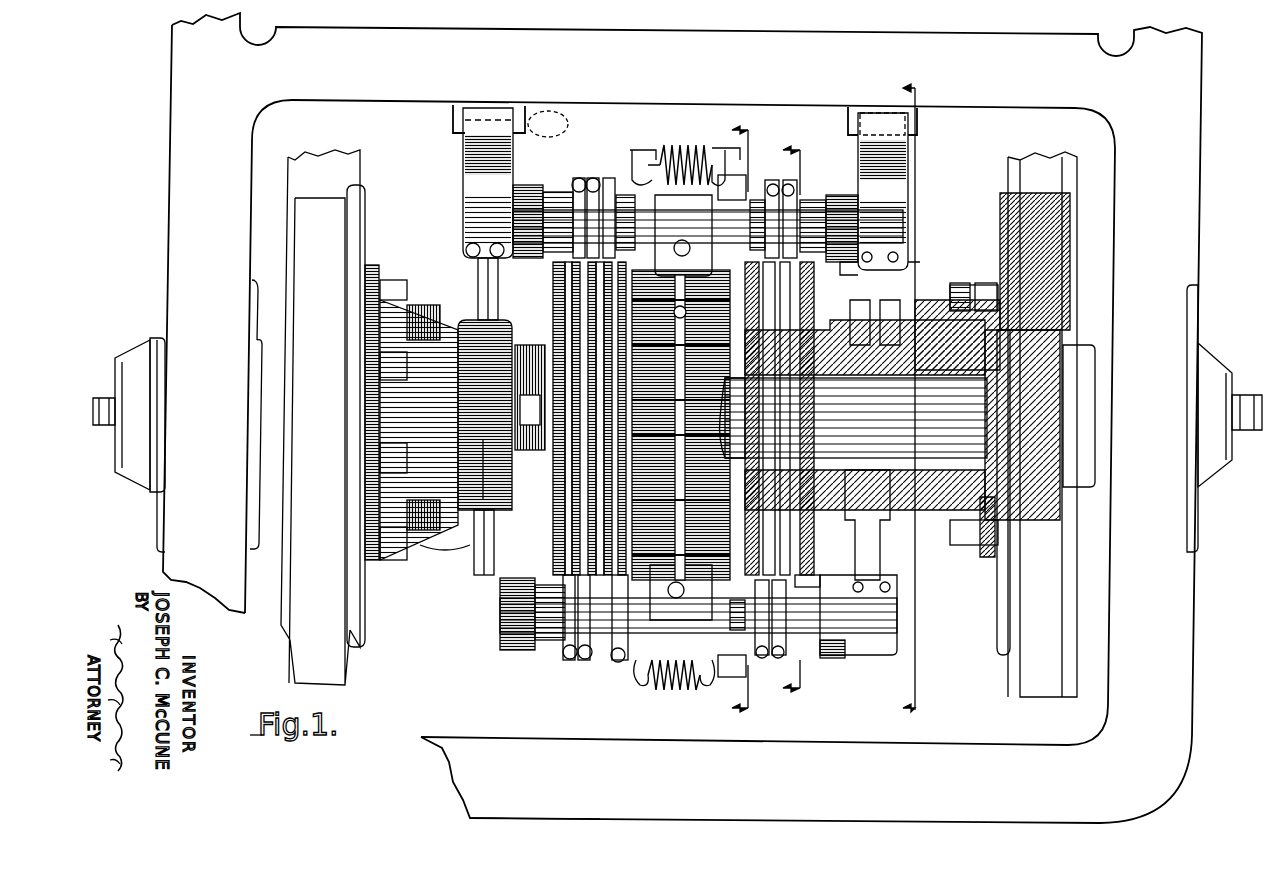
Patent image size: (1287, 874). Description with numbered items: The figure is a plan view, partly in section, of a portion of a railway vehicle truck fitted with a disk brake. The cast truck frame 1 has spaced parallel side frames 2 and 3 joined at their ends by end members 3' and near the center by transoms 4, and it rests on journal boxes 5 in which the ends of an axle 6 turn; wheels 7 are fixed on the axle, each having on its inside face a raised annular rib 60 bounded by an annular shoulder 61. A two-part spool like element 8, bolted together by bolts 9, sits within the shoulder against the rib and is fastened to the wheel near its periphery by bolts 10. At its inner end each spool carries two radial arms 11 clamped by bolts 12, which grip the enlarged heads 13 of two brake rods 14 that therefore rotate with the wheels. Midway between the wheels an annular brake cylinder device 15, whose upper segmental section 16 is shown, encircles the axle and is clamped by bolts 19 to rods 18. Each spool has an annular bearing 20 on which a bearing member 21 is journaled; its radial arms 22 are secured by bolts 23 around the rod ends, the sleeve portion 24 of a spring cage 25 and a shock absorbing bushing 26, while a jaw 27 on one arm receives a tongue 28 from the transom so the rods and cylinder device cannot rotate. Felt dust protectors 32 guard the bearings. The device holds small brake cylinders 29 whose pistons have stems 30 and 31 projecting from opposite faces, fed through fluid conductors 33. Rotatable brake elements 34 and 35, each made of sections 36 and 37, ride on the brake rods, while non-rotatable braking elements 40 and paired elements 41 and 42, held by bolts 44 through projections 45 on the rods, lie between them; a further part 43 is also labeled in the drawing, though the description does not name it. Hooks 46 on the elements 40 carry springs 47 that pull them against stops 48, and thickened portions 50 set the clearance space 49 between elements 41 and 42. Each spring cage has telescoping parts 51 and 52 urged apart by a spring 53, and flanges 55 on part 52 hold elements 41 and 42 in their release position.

The truck frame 1 is at (185, 135).
The side frame 2 is at (183, 233).
The side frame 3 is at (1065, 399).
The end member 3' is at (520, 761).
The transom 4 is at (683, 44).
The journal box 5 is at (130, 452).
The axle 6 is at (872, 411).
The wheel 7 is at (298, 626).
The spool like element 8 is at (905, 500).
The bolt 9 is at (420, 318).
The bolt 10 is at (405, 395).
The radial arm 11 is at (500, 405).
The bolt 12 is at (495, 440).
The enlarged head 13 is at (528, 397).
The brake rod 14 is at (828, 445).
The brake cylinder device 15 is at (700, 150).
The upper segmental section 16 is at (745, 398).
The rod 18 is at (690, 630).
The bolt 19 is at (700, 236).
The annular bearing 20 is at (890, 345).
The bearing member 21 is at (455, 410).
The radial arm 22 is at (478, 295).
The bolt 23 is at (470, 243).
The sleeve portion 24 is at (878, 656).
The spring cage 25 is at (812, 670).
The shock absorbing bushing 26 is at (890, 215).
The jaw 27 is at (470, 152).
The tongue 28 is at (928, 128).
The brake cylinder 29 is at (677, 430).
The piston stem 30 is at (663, 427).
The piston stem 31 is at (705, 419).
The dust protector 32 is at (875, 350).
The fluid conductor 33 is at (704, 419).
The rotatable brake element 34 is at (575, 548).
The rotatable brake element 35 is at (575, 525).
The complementary section 36 is at (590, 345).
The complementary section 37 is at (600, 500).
The non-rotatable braking element 40 is at (674, 396).
The non-rotatable brake element 41 is at (600, 285).
The non-rotatable brake element 42 is at (565, 320).
The collar 43 is at (625, 195).
The bolt 44 is at (579, 178).
The projection 45 is at (609, 178).
The hook 46 is at (640, 160).
The spring 47 is at (670, 160).
The stop 48 is at (676, 376).
The clearance space 49 is at (810, 364).
The thickened portion 50 is at (816, 571).
The spring cage part 51 is at (540, 195).
The spring cage part 52 is at (500, 672).
The spring 53 is at (820, 613).
The outwardly flaring flange 55 is at (761, 415).
The raised annular rib 60 is at (952, 300).
The annular shoulder 61 is at (985, 283).